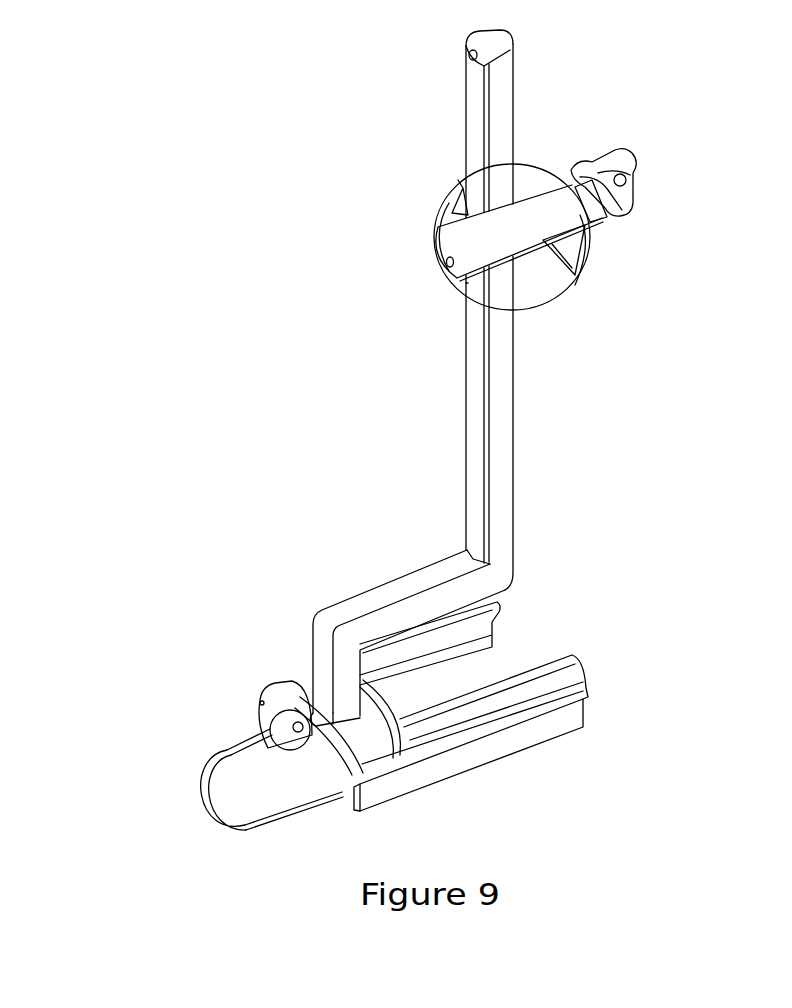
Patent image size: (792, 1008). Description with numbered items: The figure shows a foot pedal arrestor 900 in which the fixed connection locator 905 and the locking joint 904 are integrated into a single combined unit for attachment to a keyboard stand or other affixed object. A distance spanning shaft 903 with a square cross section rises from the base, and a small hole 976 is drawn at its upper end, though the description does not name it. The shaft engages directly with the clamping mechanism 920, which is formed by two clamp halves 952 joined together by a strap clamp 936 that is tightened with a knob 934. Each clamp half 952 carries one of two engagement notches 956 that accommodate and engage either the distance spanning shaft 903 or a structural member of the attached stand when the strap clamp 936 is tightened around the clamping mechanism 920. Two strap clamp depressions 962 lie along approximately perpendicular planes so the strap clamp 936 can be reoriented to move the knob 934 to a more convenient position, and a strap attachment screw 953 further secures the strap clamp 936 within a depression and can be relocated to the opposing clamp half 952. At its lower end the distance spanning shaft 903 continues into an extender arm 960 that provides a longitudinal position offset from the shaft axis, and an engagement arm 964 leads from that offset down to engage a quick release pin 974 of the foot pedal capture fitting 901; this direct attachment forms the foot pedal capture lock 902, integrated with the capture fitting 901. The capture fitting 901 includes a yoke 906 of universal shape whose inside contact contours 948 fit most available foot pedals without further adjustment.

The foot pedal arrestor 900 is at (209, 308).
The foot pedal capture fitting 901 is at (520, 784).
The foot pedal capture lock 902 is at (275, 652).
The distance spanning shaft 903 is at (500, 434).
The locking joint 904 is at (389, 167).
The fixed connection locator 905 is at (635, 248).
The yoke 906 is at (553, 720).
The clamping mechanism 920 is at (566, 164).
The knob 934 is at (630, 173).
The strap clamp 936 is at (462, 243).
The inside contact contours 948 is at (477, 623).
The clamp halves 952 is at (531, 170).
The strap attachment screw 953 is at (447, 266).
The engagement notches 956 is at (462, 183).
The extender arm 960 is at (407, 583).
The strap clamp depressions 962 is at (490, 270).
The engagement arm 964 is at (345, 673).
The quick release pin 974 is at (262, 700).
The hole 976 is at (467, 55).